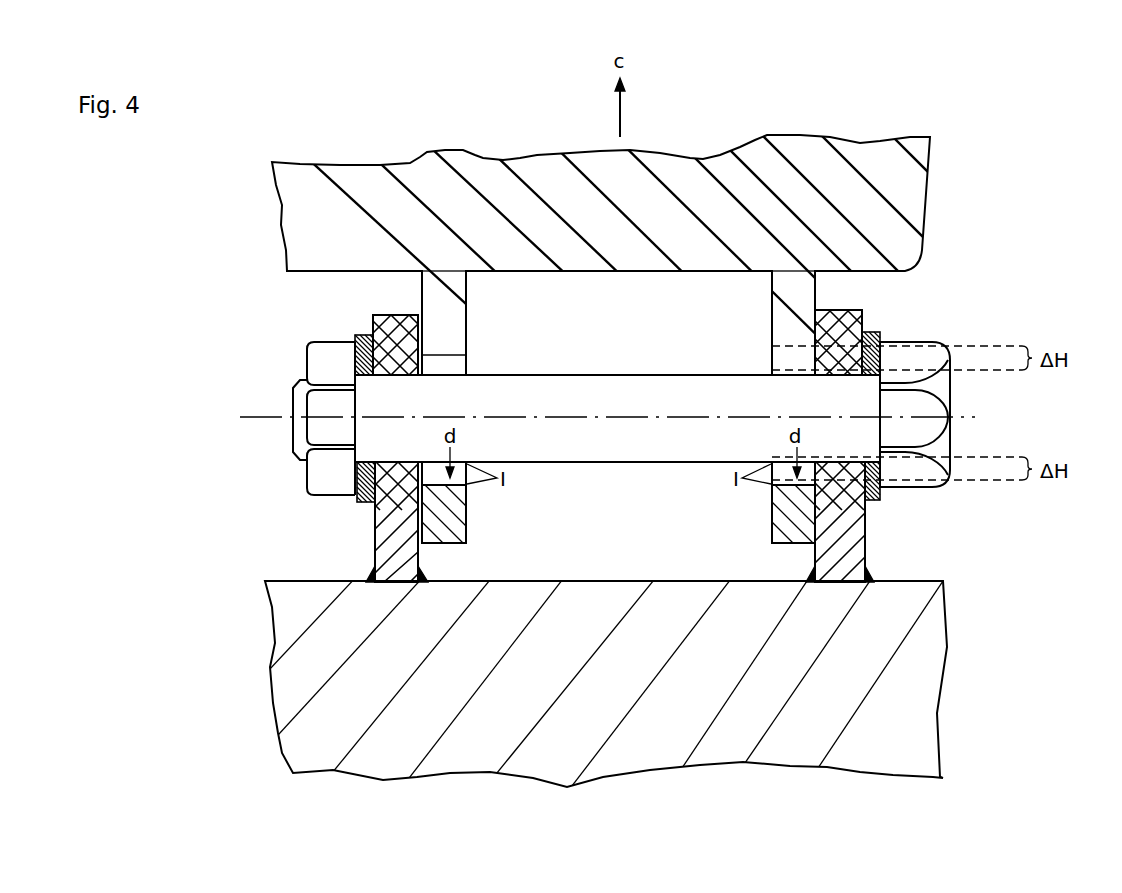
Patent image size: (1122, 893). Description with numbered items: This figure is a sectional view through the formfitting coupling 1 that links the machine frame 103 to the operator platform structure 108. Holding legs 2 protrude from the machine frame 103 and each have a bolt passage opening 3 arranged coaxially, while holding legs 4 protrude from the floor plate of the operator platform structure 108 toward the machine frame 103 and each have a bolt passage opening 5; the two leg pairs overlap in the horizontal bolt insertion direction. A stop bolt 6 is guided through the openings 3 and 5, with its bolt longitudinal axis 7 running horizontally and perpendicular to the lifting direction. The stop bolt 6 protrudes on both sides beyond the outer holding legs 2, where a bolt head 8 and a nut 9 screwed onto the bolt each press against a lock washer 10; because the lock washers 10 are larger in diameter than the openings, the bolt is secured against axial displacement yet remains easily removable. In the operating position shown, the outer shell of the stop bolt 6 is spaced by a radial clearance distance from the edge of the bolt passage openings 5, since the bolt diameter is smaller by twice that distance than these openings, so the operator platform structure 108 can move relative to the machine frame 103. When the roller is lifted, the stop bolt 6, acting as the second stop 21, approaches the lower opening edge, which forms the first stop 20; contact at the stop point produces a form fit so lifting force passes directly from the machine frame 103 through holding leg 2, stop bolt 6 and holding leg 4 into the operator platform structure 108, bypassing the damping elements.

The formfitting coupling 1 is at (936, 99).
The holding leg 2 is at (382, 540).
The bolt passage opening 3 is at (376, 323).
The holding leg 4 is at (431, 320).
The bolt passage opening 5 is at (420, 477).
The stop bolt 6 is at (410, 435).
The bolt longitudinal axis 7 is at (258, 415).
The bolt head 8 is at (935, 383).
The nut 9 is at (330, 373).
The lock washer 10 is at (360, 335).
The first stop 20 is at (797, 485).
The second stop 21 is at (788, 462).
The machine frame 103 is at (335, 688).
The operator platform structure 108 is at (358, 185).